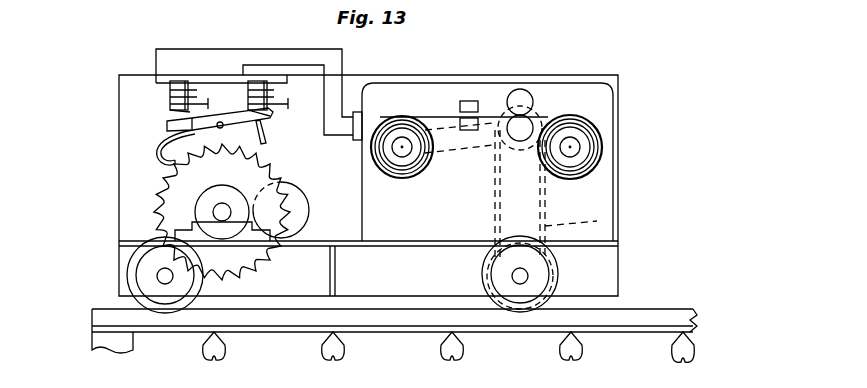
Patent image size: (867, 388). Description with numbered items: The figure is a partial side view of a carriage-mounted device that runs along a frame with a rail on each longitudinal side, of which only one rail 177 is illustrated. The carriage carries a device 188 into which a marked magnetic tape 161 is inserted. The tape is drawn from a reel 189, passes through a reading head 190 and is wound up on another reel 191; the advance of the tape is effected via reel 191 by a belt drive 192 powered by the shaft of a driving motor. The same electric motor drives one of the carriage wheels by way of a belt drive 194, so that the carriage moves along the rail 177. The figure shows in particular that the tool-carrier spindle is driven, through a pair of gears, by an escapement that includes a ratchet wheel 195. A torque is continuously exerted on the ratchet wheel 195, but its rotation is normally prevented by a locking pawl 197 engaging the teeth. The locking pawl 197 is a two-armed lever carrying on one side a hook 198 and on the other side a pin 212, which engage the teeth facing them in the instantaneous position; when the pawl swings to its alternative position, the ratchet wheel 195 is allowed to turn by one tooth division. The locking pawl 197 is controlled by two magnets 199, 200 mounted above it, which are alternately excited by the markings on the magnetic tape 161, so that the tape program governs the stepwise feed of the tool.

The magnetic tape 161 is at (545, 115).
The rail 177 is at (655, 315).
The device 188 is at (583, 113).
The reel 189 is at (600, 152).
The reading head 190 is at (472, 102).
The reel 191 is at (390, 115).
The belt drive 192 is at (435, 130).
The belt drive 194 is at (597, 222).
The ratchet wheel 195 is at (153, 198).
The locking pawl 197 is at (167, 125).
The hook 198 is at (157, 158).
The magnet 199 is at (170, 92).
The magnet 200 is at (263, 82).
The pin 212 is at (265, 145).